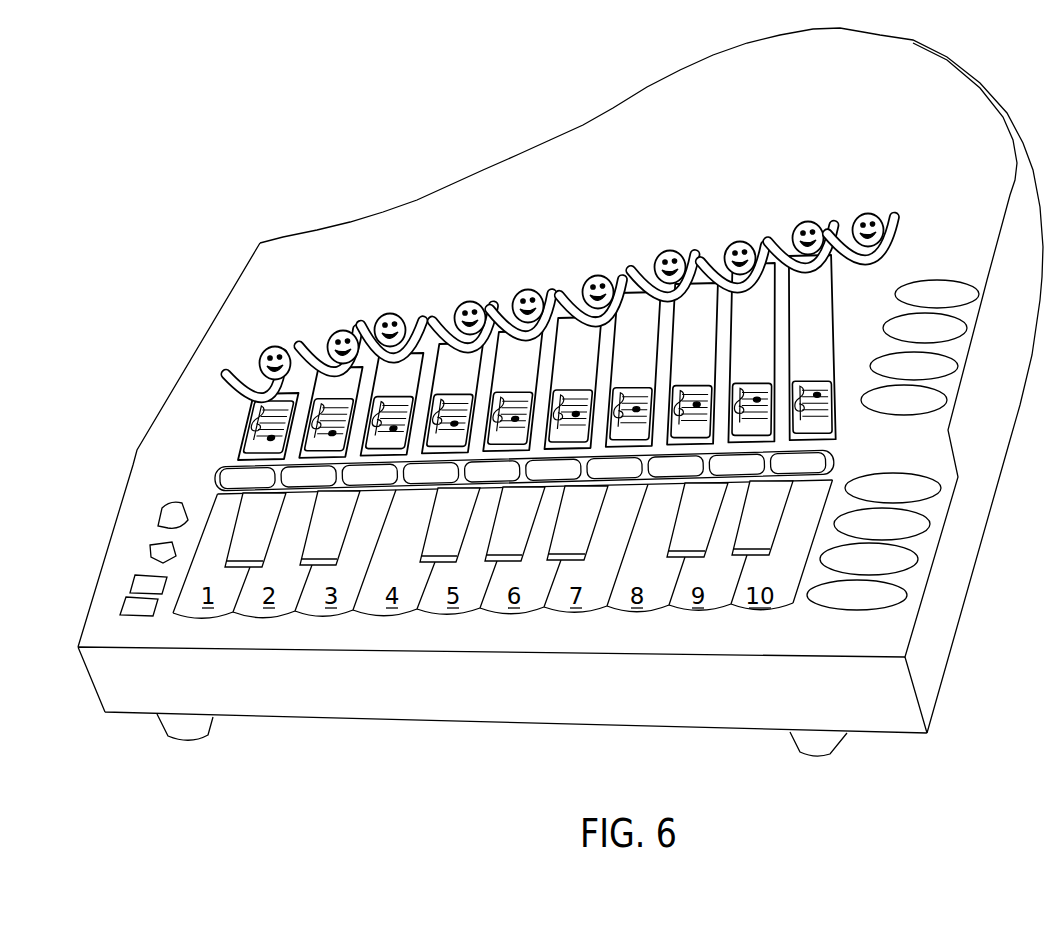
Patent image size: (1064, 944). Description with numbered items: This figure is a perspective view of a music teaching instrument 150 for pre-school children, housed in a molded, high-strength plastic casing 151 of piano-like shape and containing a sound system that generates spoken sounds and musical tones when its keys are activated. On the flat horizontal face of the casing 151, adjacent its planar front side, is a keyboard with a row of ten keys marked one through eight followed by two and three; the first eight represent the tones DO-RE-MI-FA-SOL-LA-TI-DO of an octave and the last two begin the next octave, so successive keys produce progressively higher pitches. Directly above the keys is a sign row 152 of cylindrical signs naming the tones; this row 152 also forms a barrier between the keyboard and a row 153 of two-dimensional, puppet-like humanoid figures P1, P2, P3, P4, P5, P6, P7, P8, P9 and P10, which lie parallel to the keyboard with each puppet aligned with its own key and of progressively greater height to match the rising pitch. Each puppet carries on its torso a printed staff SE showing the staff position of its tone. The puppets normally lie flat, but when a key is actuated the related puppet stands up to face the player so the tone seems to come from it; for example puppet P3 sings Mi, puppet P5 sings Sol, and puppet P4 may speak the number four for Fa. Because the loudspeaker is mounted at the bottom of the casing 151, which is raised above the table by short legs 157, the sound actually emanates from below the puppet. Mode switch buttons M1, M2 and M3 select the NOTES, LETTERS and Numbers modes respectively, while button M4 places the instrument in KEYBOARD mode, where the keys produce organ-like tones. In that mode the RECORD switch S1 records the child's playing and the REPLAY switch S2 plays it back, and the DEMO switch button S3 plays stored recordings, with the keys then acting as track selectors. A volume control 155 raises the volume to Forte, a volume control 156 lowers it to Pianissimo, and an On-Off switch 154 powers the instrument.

The music teaching instrument 150 is at (455, 162).
The casing 151 is at (197, 345).
The sign row 152 is at (212, 470).
The row of humanoid figures 153 is at (242, 418).
The On-Off switch 154 is at (130, 586).
The volume control 155 is at (163, 510).
The volume control 156 is at (148, 557).
The short legs 157 is at (167, 732).
The two-dimensional puppet P1 is at (270, 347).
The two-dimensional puppet P2 is at (343, 331).
The two-dimensional puppet P3 is at (393, 315).
The two-dimensional puppet P4 is at (473, 302).
The two-dimensional puppet P5 is at (531, 290).
The two-dimensional puppet P6 is at (600, 276).
The two-dimensional puppet P7 is at (670, 251).
The two-dimensional puppet P8 is at (740, 242).
The two-dimensional puppet P9 is at (810, 222).
The two-dimensional puppet P10 is at (869, 214).
The staff element SE is at (437, 392).
The RECORD switch S1 is at (944, 368).
The REPLAY switch S2 is at (958, 329).
The DEMO switch button S3 is at (925, 280).
The mode switch button M1 is at (893, 483).
The mode switch M2 is at (929, 525).
The mode switch M3 is at (918, 569).
The KEYBOARD mode button M4 is at (905, 608).